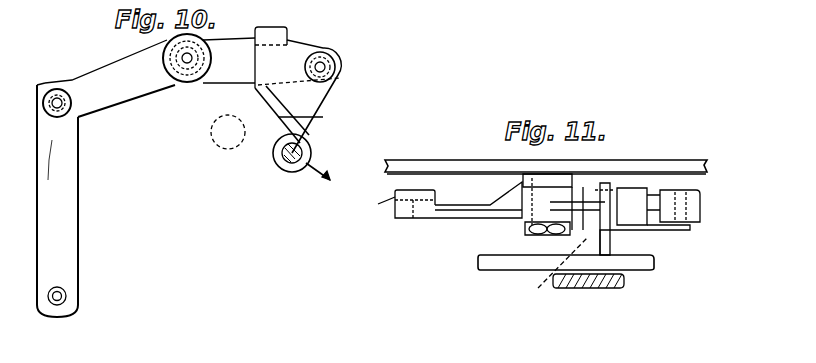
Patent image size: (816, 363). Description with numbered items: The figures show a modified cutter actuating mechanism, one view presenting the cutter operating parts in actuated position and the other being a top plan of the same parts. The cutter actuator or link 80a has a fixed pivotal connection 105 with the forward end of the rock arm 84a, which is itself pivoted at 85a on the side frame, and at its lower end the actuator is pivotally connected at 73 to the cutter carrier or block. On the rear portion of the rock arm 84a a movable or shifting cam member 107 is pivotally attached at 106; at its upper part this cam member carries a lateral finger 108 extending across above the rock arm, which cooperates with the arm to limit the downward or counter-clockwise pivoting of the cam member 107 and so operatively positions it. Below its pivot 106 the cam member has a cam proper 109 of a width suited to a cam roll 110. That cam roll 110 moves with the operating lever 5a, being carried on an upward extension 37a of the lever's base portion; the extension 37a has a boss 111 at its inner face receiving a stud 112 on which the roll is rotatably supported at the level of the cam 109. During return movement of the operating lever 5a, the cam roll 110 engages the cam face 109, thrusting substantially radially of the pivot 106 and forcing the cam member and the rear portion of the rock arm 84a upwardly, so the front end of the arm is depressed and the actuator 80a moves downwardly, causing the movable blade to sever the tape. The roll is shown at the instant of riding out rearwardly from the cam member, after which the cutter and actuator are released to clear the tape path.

In FIG. 11, the operating lever 5a is at (588, 289).
In FIG. 11, the upward extension of the base portion 37a is at (517, 263).
In FIG. 10, the pivotal connection 73 is at (66, 296).
In FIG. 10, the cutter actuator or link 80a is at (70, 214).
In FIG. 11, the cutter actuator or link 80a is at (370, 201).
In FIG. 10, the rock arm 84a is at (128, 96).
In FIG. 11, the rock arm 84a is at (452, 212).
In FIG. 10, the pivot of the rock arm 85a is at (187, 62).
In FIG. 11, the pivot of the rock arm 85a is at (542, 175).
In FIG. 10, the fixed pivotal connection 105 is at (57, 90).
In FIG. 11, the fixed pivotal connection 105 is at (412, 211).
In FIG. 10, the pivot of the cam member 106 is at (325, 66).
In FIG. 11, the pivot of the cam member 106 is at (690, 222).
In FIG. 10, the movable or shifting cam member 107 is at (278, 57).
In FIG. 11, the movable or shifting cam member 107 is at (668, 224).
In FIG. 10, the lateral finger 108 is at (278, 28).
In FIG. 11, the lateral finger 108 is at (633, 193).
In FIG. 10, the cam proper 109 is at (300, 126).
In FIG. 11, the cam proper 109 is at (650, 232).
In FIG. 10, the cam roll 110 is at (284, 162).
In FIG. 11, the cam roll 110 is at (604, 195).
In FIG. 11, the boss 111 is at (535, 238).
In FIG. 11, the stud 112 is at (556, 276).